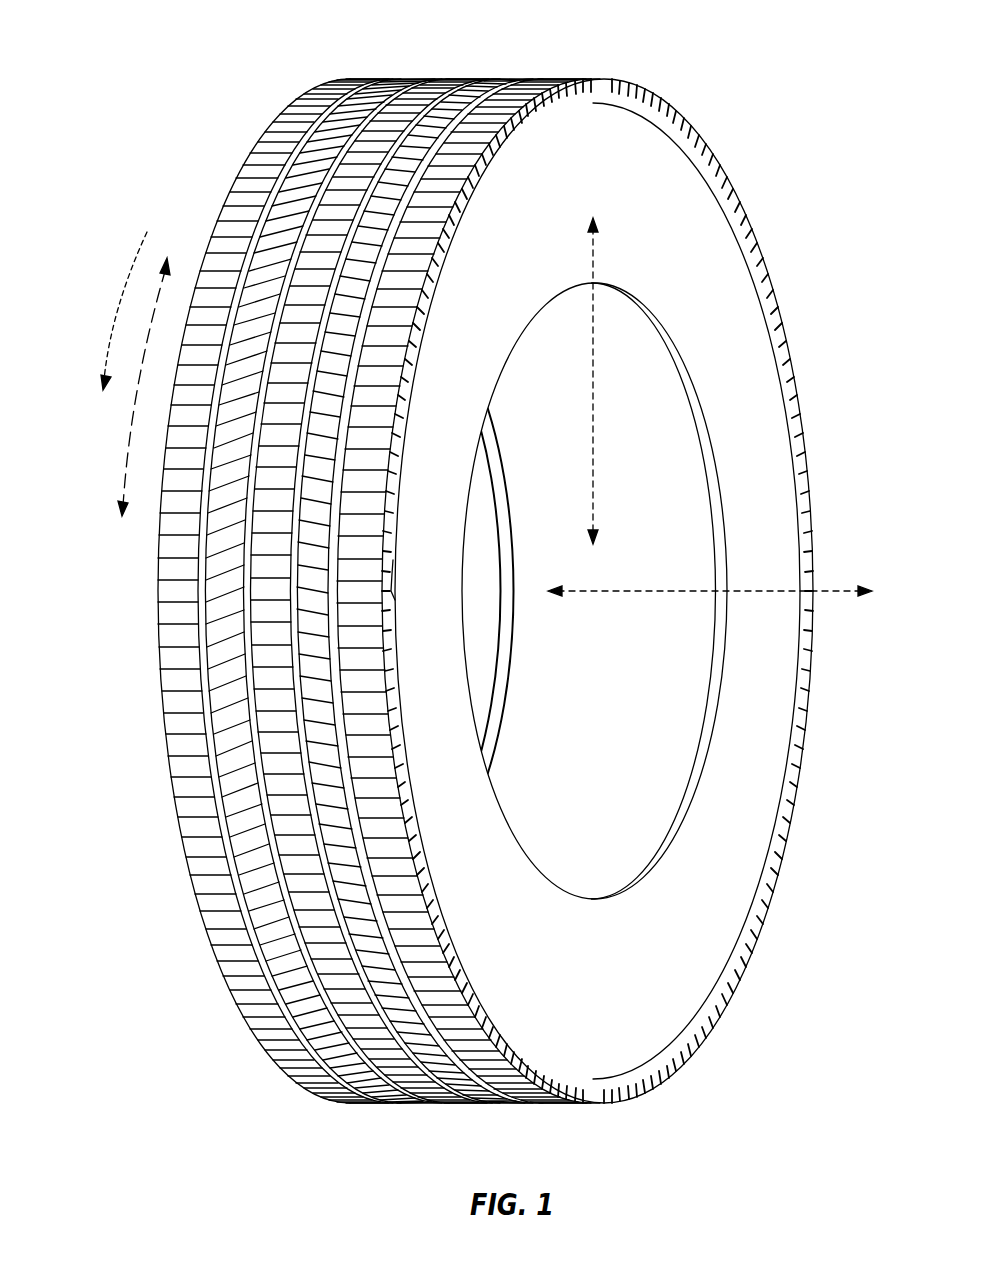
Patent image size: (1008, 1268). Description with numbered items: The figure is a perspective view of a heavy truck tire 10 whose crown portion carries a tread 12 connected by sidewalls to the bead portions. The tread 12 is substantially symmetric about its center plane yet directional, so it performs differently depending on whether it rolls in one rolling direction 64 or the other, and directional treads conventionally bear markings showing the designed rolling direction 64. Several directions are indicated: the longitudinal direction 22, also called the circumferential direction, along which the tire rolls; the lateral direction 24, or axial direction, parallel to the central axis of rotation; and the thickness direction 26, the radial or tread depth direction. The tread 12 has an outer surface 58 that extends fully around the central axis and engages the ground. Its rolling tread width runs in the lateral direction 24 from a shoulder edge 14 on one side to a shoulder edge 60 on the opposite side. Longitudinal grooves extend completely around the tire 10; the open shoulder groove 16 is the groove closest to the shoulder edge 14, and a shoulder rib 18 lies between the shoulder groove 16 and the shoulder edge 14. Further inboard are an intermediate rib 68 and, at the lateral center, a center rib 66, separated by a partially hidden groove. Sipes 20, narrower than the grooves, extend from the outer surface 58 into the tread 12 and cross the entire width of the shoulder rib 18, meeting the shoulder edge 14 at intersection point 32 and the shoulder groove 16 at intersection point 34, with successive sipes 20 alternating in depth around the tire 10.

The heavy truck tire 10 is at (732, 64).
The tread 12 is at (232, 214).
The shoulder edge 14 is at (398, 413).
The shoulder groove 16 is at (355, 472).
The shoulder rib 18 is at (373, 497).
The sipes 20 is at (362, 525).
The longitudinal direction 22 is at (127, 440).
The lateral direction 24 is at (696, 590).
The thickness direction 26 is at (594, 355).
The intersection point 32 is at (382, 598).
The intersection point 34 is at (325, 607).
The outer surface 58 is at (254, 834).
The shoulder edge 60 is at (167, 743).
The rolling direction 64 is at (120, 306).
The center rib 66 is at (407, 84).
The intermediate rib 68 is at (477, 82).